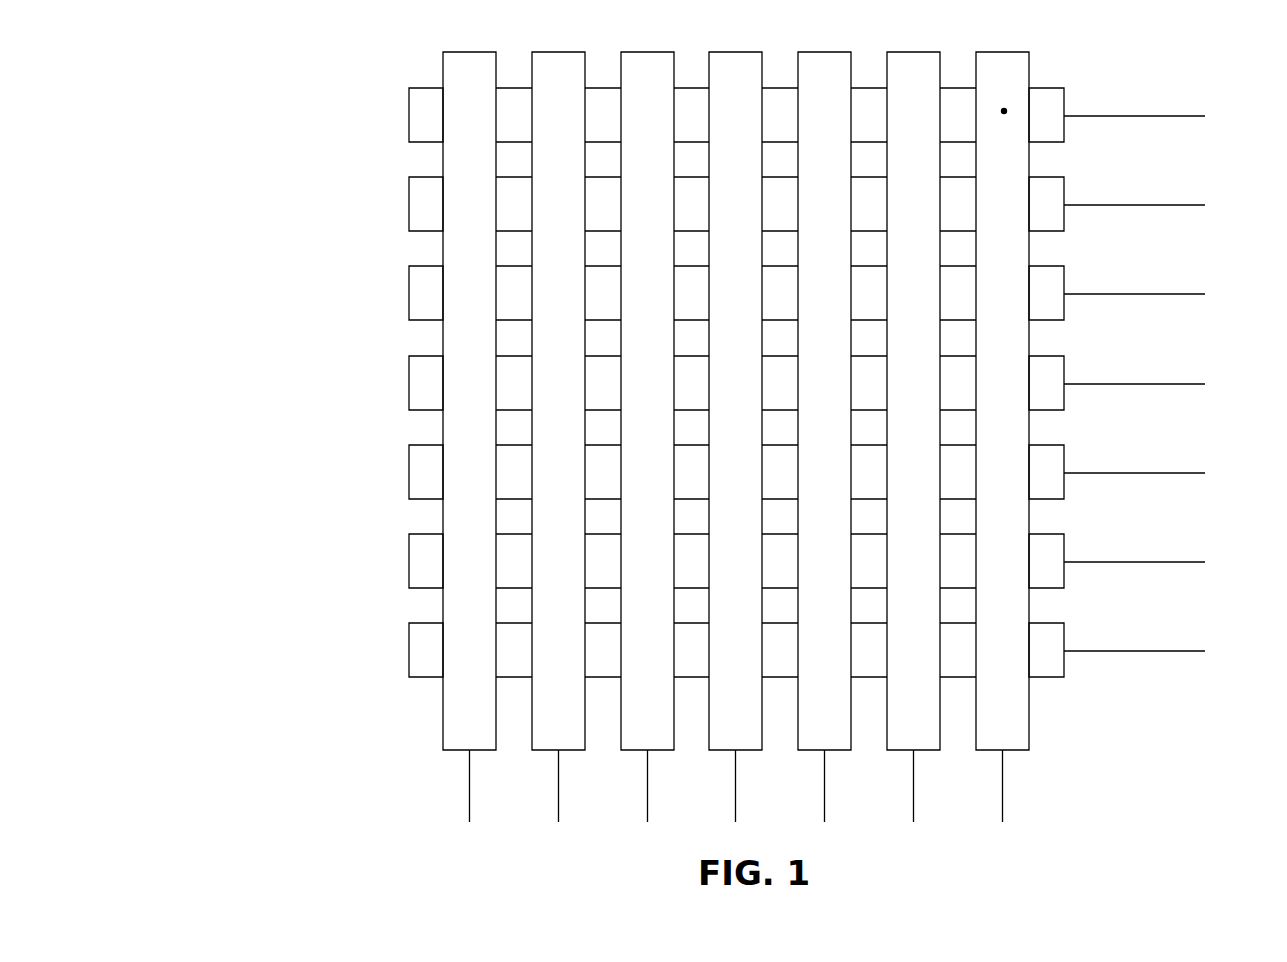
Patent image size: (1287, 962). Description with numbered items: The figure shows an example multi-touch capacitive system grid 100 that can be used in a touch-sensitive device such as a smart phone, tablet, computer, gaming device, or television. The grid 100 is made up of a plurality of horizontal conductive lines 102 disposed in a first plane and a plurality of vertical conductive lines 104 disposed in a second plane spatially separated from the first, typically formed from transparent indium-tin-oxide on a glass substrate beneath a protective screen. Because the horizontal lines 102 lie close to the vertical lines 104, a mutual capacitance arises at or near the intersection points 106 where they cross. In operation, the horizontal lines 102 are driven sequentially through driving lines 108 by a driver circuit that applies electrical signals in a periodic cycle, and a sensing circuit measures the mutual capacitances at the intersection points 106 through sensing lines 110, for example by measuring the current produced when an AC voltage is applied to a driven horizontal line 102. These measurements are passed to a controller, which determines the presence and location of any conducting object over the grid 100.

The multi-touch capacitive system grid 100 is at (283, 80).
The horizontal conductive lines 102 is at (1044, 88).
The vertical conductive lines 104 is at (1029, 712).
The intersection points 106 is at (1004, 111).
The driving lines 108 is at (1180, 116).
The sensing lines 110 is at (1002, 790).